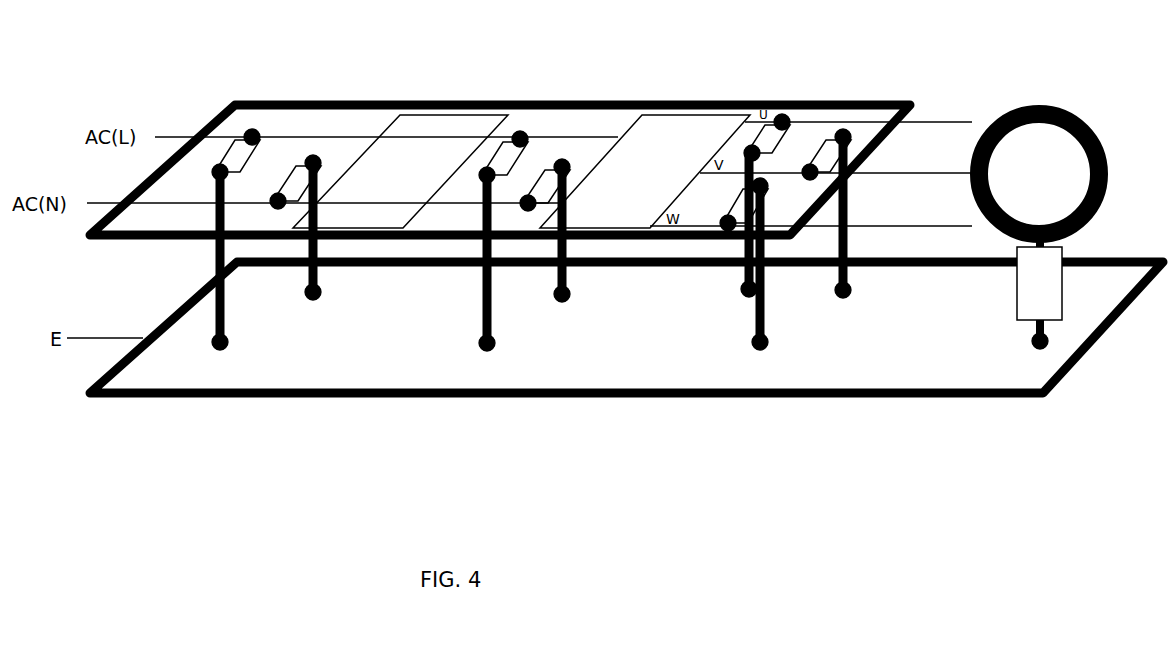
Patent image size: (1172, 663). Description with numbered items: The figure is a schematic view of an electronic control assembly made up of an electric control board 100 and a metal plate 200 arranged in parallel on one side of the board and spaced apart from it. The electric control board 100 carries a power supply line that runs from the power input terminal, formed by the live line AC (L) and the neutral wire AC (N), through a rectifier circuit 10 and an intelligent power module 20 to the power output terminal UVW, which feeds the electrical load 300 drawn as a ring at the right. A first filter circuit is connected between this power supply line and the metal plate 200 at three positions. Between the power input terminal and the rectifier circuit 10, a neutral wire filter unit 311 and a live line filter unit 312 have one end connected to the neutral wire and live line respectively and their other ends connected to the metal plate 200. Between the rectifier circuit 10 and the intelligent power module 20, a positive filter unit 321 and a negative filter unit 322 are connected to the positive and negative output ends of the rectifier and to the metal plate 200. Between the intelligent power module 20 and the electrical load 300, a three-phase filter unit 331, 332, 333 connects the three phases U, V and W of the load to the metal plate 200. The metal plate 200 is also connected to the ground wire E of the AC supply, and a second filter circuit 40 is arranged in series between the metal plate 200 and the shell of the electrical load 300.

The electric control board 100 is at (380, 103).
The metal plate 200 is at (380, 370).
The rectifier circuit 10 is at (432, 165).
The intelligent power module 20 is at (661, 160).
The neutral wire filter unit 311 is at (235, 130).
The live line filter unit 312 is at (302, 160).
The positive filter unit 321 is at (517, 138).
The negative filter unit 322 is at (562, 165).
The three-phase filter unit 331 is at (768, 138).
The three-phase filter unit 332 is at (824, 150).
The three-phase filter unit 333 is at (742, 188).
The electrical load 300 is at (1040, 112).
The second filter circuit 40 is at (1046, 278).